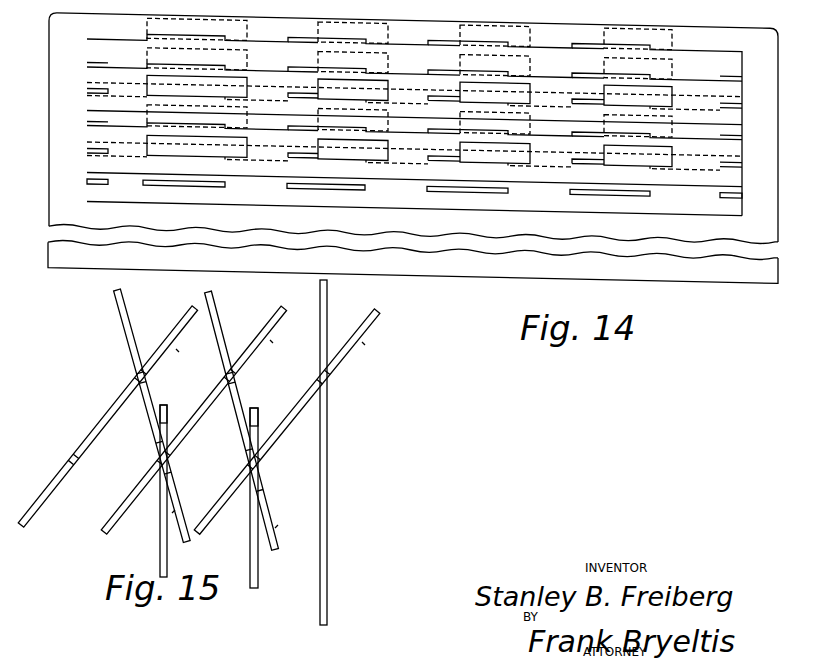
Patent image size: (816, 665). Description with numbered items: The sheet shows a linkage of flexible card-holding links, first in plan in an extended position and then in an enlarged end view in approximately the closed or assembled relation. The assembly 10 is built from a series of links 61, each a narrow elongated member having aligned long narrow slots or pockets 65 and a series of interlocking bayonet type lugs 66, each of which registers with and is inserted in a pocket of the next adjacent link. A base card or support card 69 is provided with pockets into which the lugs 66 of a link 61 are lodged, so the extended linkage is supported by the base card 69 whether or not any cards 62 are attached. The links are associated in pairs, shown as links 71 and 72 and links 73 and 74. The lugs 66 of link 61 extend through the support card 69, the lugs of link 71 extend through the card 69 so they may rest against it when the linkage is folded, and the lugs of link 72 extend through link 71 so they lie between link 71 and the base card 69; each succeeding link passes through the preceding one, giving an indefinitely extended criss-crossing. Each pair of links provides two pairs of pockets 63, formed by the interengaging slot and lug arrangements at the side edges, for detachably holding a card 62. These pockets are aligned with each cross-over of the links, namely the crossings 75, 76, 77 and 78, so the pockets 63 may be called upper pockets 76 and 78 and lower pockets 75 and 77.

In FIG. 14, the electrode array assembly 10 is at (298, 32).
In FIG. 15, the link 61 is at (282, 438).
In FIG. 15, the card 62 is at (167, 561).
In FIG. 14, the slot and lug arrangement 63 is at (743, 91).
In FIG. 15, the slot and lug arrangement 63 is at (70, 462).
In FIG. 14, the slot or pocket 65 is at (570, 181).
In FIG. 15, the bayonet type lug 66 is at (176, 349).
In FIG. 14, the base card 69 is at (745, 16).
In FIG. 15, the base card 69 is at (327, 405).
In FIG. 15, the link 71 is at (251, 406).
In FIG. 15, the link 72 is at (194, 426).
In FIG. 15, the link 73 is at (160, 406).
In FIG. 15, the link 74 is at (105, 428).
In FIG. 15, the lower pocket 75 is at (258, 467).
In FIG. 15, the upper pocket 76 is at (239, 377).
In FIG. 15, the lower pocket 77 is at (168, 460).
In FIG. 15, the upper pocket 78 is at (151, 376).